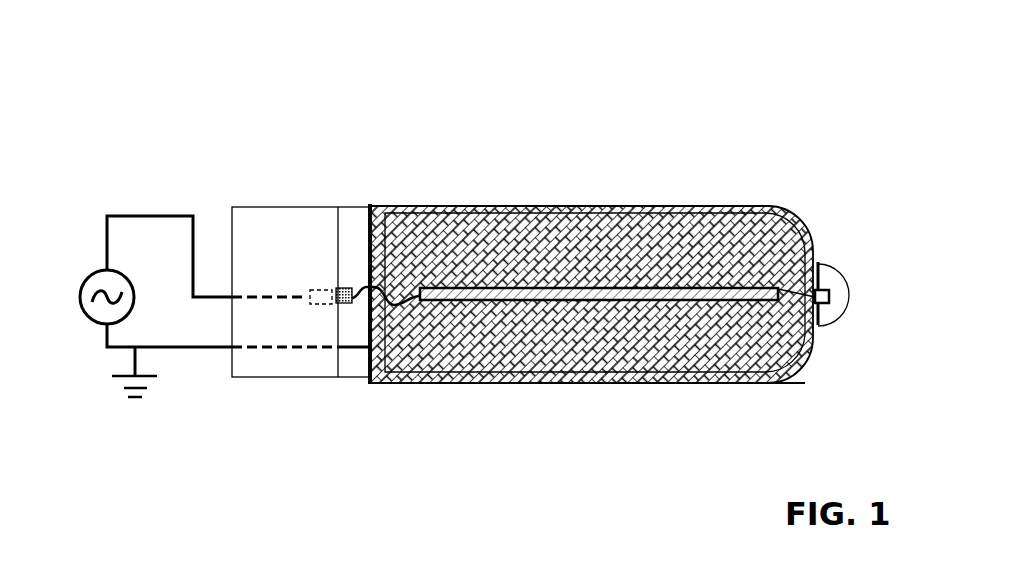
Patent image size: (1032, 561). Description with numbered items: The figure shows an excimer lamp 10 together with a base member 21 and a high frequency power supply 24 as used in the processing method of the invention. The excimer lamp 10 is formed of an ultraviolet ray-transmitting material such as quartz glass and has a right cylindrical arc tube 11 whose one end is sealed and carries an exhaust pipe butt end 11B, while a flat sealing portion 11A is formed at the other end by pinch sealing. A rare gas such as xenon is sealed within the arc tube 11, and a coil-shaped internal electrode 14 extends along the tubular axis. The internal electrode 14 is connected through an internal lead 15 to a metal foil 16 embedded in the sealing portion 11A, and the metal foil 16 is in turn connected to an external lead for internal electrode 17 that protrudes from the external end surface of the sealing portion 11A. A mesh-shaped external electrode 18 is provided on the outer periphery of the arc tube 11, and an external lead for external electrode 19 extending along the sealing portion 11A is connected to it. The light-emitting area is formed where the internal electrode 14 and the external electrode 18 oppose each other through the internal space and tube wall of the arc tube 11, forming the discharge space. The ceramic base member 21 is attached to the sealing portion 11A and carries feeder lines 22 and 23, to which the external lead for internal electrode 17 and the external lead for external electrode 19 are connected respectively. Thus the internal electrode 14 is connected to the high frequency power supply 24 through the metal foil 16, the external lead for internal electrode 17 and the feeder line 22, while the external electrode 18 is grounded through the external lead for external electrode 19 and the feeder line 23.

The excimer lamp 10 is at (739, 186).
The arc tube 11 is at (532, 207).
The sealing portion 11A is at (368, 214).
The exhaust pipe butt end 11B is at (845, 275).
The internal electrode 14 is at (615, 285).
The internal lead 15 is at (356, 305).
The metal foil 16 is at (352, 285).
The external lead for internal electrode 17 is at (270, 292).
The external electrode 18 is at (512, 385).
The external lead for external electrode 19 is at (348, 304).
The base member 21 is at (262, 377).
The feeder line 22 is at (145, 214).
The feeder line 23 is at (178, 350).
The high frequency power supply 24 is at (83, 284).